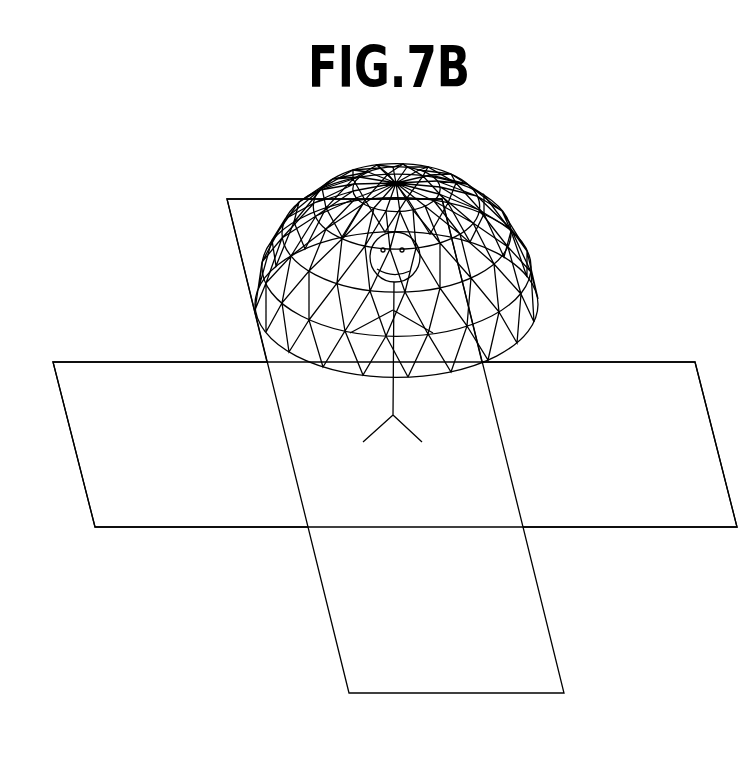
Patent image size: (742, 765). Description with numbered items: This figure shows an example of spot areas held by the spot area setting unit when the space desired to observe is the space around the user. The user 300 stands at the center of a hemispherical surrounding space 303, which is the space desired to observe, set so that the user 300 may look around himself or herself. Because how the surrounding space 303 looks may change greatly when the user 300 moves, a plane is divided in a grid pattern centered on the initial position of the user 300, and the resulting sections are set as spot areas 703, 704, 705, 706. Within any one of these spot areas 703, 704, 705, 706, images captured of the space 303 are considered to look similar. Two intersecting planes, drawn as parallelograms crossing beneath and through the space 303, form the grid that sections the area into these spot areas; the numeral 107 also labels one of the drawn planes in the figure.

The space 303 is at (433, 187).
The user 300 is at (405, 433).
The spot area 703 is at (472, 512).
The spot area 704 is at (625, 377).
The spot area 705 is at (135, 378).
The spot area 706 is at (260, 212).
The display surface 107 is at (348, 630).